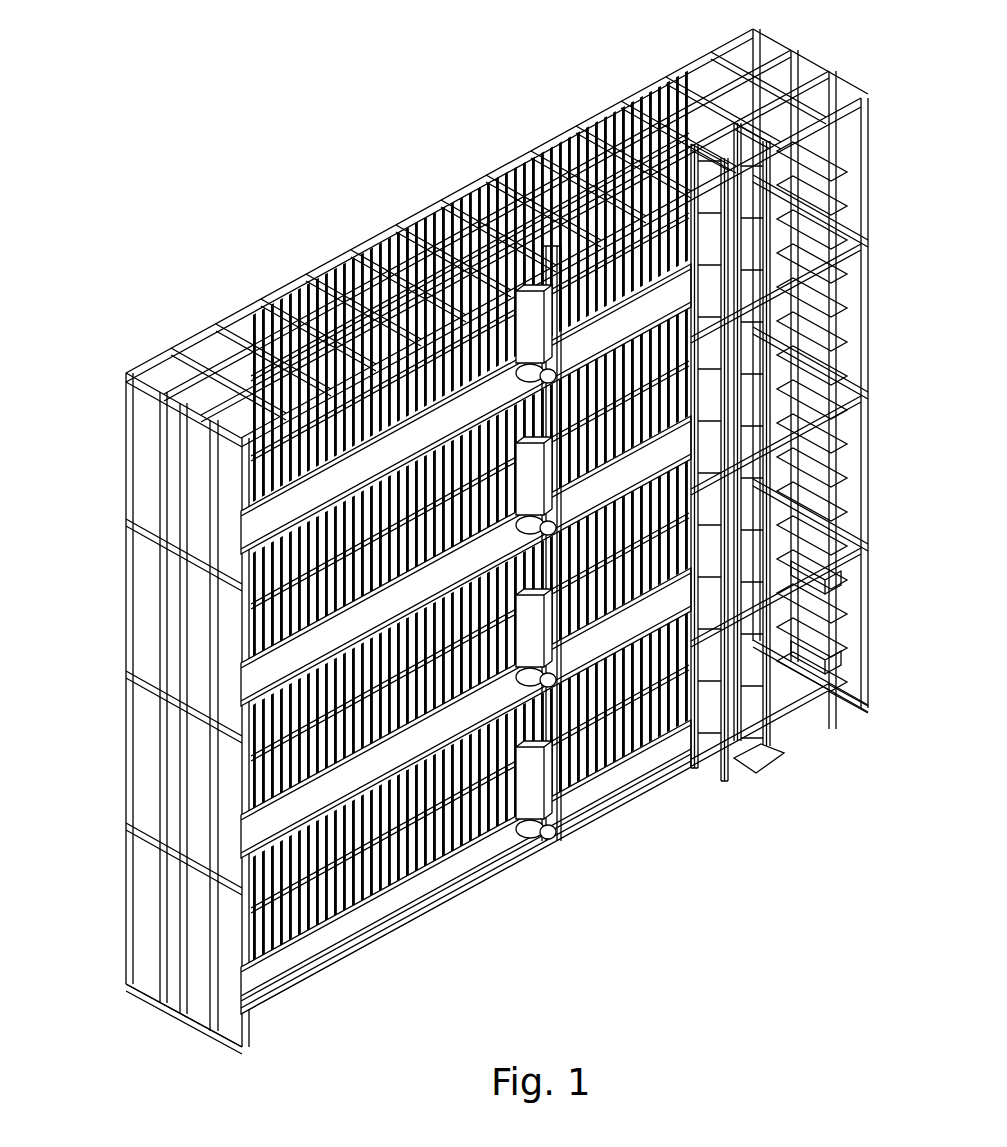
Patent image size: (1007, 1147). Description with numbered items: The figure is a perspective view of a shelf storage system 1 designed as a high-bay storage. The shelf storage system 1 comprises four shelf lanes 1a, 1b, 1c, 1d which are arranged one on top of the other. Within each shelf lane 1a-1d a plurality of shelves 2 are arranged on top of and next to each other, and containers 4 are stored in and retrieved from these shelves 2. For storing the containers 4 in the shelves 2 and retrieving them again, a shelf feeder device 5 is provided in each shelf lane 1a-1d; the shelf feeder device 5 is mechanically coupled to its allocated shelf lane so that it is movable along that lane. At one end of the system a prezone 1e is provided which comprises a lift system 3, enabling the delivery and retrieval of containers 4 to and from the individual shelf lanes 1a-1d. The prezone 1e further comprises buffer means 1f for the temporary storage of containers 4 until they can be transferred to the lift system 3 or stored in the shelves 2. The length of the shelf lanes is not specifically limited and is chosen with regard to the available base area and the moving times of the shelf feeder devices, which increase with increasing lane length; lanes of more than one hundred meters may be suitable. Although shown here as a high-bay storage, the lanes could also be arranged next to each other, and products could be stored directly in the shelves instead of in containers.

The shelf storage system 1 is at (489, 533).
The shelf lane 1a is at (152, 927).
The shelf lane 1b is at (152, 767).
The shelf lane 1c is at (153, 604).
The shelf lane 1d is at (152, 470).
The prezone 1e is at (822, 100).
The buffer means 1f is at (800, 192).
The shelves 2 is at (462, 858).
The lift system 3 is at (758, 757).
The containers 4 is at (797, 663).
The shelf feeder device 5 is at (617, 763).